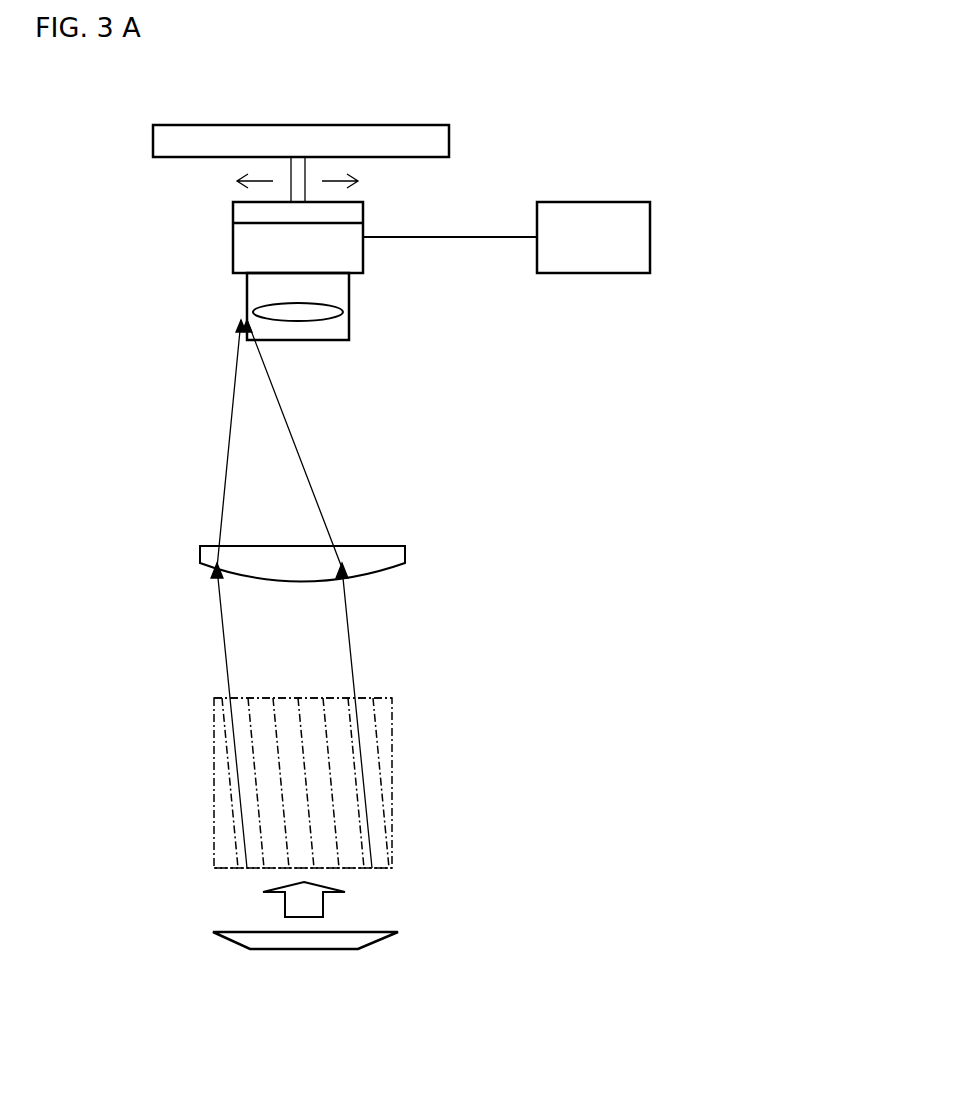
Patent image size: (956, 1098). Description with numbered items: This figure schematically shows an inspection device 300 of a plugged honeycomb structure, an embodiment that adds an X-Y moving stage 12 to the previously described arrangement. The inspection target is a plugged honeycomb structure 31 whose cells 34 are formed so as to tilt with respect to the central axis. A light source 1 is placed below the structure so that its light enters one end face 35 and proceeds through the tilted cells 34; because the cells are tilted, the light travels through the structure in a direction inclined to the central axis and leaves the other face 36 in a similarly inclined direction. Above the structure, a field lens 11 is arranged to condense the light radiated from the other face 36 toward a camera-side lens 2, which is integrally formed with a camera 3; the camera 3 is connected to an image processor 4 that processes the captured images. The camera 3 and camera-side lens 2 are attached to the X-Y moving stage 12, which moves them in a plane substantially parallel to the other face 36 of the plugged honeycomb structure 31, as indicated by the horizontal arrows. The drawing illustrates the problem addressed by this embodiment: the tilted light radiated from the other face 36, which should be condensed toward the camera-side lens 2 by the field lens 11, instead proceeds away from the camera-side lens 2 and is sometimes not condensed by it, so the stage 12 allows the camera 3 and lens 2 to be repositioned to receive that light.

The inspection device of plugged honeycomb structure 300 is at (840, 92).
The X-Y moving stage 12 is at (449, 140).
The camera 3 is at (233, 258).
The camera-side lens 2 is at (305, 320).
The image processor 4 is at (598, 273).
The field lens 11 is at (372, 577).
The plugged honeycomb structure 31 is at (390, 790).
The cell 34 is at (290, 745).
The the other face 36 is at (375, 703).
The one end face 35 is at (383, 868).
The light source 1 is at (370, 944).